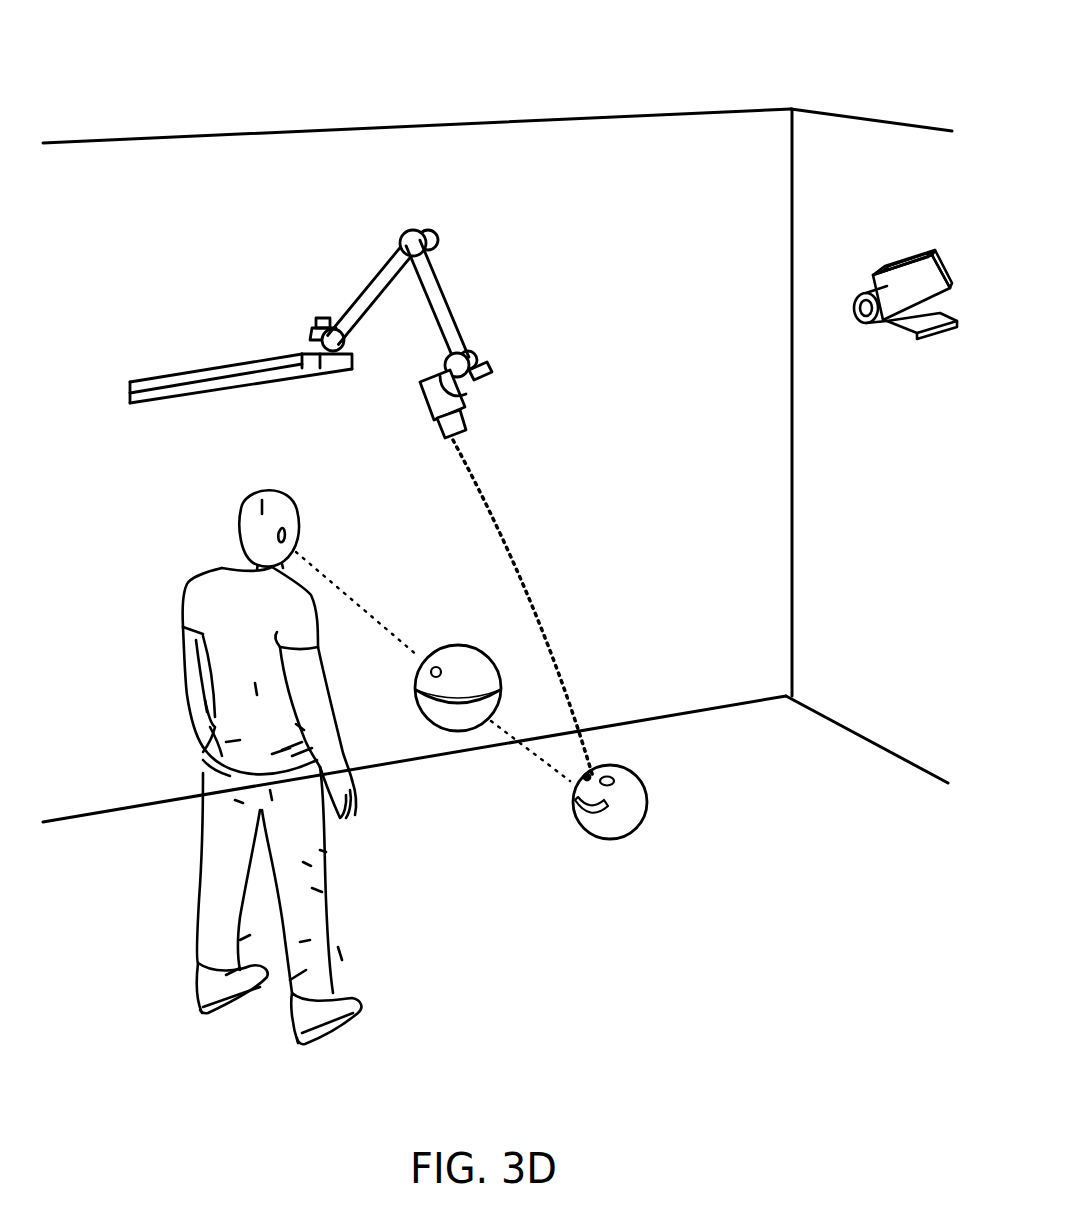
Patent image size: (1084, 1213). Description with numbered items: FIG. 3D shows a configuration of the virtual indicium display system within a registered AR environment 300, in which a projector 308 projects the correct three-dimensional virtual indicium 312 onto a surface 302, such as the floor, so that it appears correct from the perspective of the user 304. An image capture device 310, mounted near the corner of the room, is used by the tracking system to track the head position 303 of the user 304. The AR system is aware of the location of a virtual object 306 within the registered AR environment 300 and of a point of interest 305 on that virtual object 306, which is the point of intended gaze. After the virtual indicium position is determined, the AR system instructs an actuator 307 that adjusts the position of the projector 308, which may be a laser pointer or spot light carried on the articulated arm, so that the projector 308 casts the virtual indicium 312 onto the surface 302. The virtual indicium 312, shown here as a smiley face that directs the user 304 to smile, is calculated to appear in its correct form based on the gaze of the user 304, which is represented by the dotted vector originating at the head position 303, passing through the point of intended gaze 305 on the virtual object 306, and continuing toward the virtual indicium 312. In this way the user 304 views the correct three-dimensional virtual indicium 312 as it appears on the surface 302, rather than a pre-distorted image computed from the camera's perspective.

The registered AR environment 300 is at (205, 90).
The surface 302 is at (785, 1000).
The head position 303 is at (262, 507).
The user 304 is at (226, 726).
The point of interest 305 is at (431, 673).
The virtual object 306 is at (417, 756).
The actuator 307 is at (505, 358).
The projector 308 is at (482, 414).
The image capture device 310 is at (882, 246).
The correct three-dimensional virtual indicium 312 is at (648, 780).